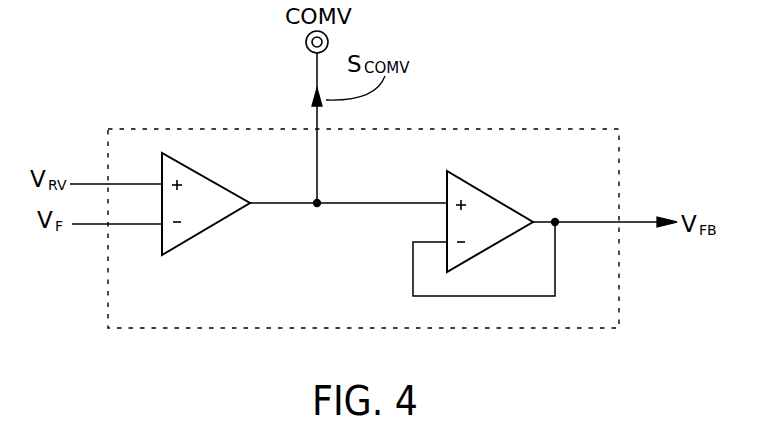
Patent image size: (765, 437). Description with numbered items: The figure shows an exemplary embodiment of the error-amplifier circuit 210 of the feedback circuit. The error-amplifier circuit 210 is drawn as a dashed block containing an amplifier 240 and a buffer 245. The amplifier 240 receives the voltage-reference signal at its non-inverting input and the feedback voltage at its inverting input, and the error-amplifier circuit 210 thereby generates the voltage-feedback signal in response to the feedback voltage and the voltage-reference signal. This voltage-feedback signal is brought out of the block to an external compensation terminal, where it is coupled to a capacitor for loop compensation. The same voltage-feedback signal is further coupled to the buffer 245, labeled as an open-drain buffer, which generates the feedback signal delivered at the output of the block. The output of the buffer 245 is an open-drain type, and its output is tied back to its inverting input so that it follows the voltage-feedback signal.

The error-amplifier circuit 210 is at (532, 128).
The comparator / error amplifier 240 is at (200, 233).
The buffer 245 is at (491, 194).